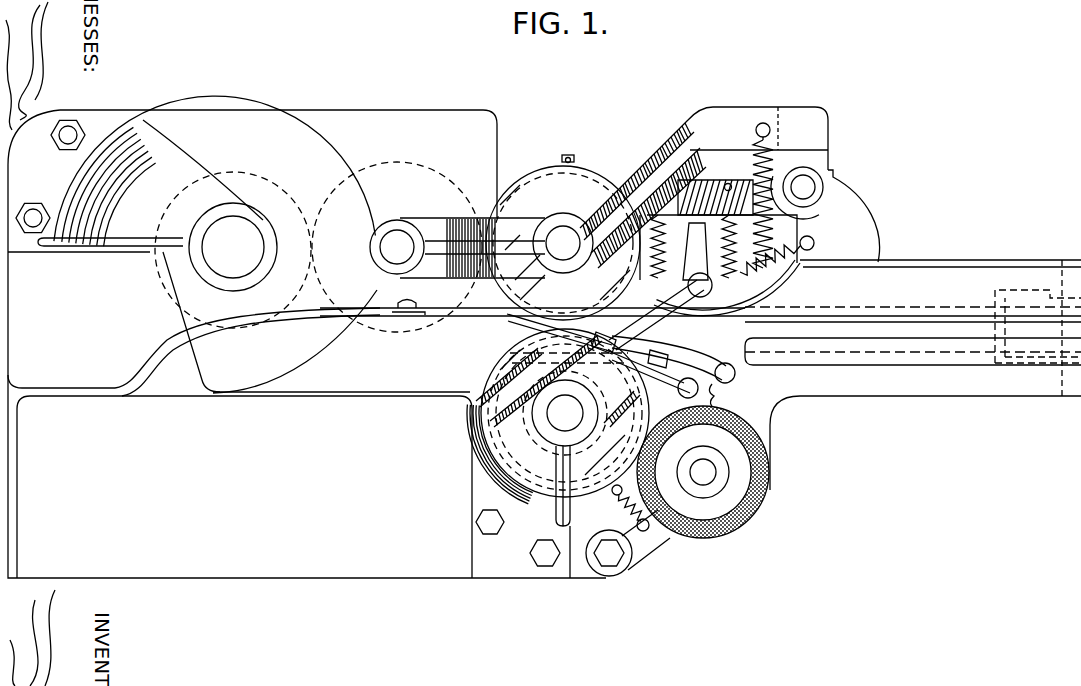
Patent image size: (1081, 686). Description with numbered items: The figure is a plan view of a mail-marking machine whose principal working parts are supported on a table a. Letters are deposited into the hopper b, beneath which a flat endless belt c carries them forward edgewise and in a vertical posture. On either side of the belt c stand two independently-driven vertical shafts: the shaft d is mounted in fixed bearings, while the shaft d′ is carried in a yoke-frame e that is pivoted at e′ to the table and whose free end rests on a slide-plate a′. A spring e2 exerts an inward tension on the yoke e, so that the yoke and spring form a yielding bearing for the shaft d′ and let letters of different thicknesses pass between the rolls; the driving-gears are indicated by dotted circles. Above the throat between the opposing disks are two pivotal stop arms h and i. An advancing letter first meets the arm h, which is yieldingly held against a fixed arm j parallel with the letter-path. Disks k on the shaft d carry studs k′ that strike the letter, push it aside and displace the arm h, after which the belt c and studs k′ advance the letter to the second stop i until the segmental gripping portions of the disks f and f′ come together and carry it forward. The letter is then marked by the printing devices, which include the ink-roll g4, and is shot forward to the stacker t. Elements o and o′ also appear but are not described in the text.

The table a is at (307, 325).
The stacker t is at (270, 380).
The pivot e' is at (397, 247).
The feed-disks f' is at (563, 221).
The vertical shaft d' is at (578, 195).
The yoke-frame e is at (704, 164).
The spring e2 is at (768, 150).
The slide-plate a' is at (772, 223).
The pivot pin o is at (723, 170).
The pivot bearing o' is at (830, 193).
The hopper b is at (960, 280).
The endless belt c is at (867, 330).
The stud k' is at (561, 311).
The pivotal arm h is at (665, 354).
The fixed arm j is at (711, 366).
The second stop arm i is at (655, 365).
The disks k is at (541, 381).
The feeding-disk f is at (547, 416).
The vertical shaft d is at (511, 479).
The ink-roll g4 is at (770, 488).